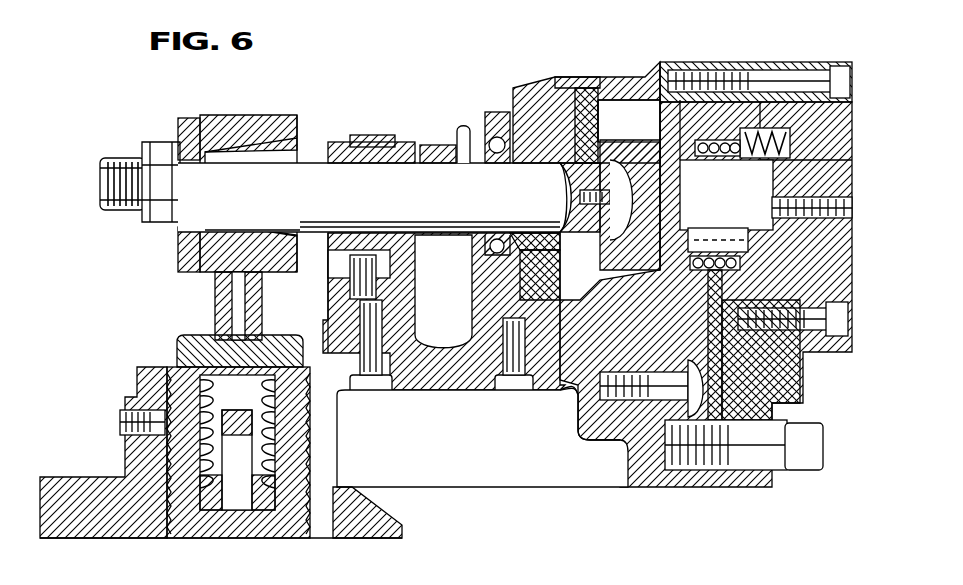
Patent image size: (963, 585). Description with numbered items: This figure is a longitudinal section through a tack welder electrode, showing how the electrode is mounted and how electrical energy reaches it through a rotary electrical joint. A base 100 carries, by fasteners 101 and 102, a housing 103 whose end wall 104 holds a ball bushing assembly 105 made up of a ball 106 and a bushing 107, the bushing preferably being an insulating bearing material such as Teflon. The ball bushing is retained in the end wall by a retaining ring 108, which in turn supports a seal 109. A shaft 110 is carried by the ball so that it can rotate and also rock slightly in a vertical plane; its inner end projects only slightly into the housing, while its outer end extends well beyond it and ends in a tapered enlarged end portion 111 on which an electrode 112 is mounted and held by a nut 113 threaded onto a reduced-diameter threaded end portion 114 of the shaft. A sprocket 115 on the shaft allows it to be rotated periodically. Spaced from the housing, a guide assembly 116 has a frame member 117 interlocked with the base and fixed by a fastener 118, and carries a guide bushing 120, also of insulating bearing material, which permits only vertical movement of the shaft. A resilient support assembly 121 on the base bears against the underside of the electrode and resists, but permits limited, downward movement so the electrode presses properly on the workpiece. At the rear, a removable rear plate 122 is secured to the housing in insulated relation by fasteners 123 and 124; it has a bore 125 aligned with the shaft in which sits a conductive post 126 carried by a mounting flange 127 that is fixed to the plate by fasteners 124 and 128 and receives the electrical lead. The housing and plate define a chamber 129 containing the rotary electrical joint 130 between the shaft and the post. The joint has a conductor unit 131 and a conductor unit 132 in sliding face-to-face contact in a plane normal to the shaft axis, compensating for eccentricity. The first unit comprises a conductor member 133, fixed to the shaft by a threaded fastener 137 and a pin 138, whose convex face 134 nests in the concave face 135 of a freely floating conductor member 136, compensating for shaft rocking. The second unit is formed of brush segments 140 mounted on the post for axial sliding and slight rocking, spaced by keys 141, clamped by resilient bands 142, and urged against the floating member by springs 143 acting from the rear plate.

The base 100 is at (580, 485).
The fastener 101 is at (512, 405).
The fastener 102 is at (620, 443).
The housing 103 is at (590, 80).
The end wall 104 is at (492, 305).
The ball bushing assembly 105 is at (494, 279).
The ball 106 is at (562, 130).
The bushing 107 is at (540, 135).
The retaining ring 108 is at (495, 112).
The seal 109 is at (468, 130).
The shaft 110 is at (320, 150).
The enlarged end portion 111 is at (280, 178).
The electrode 112 is at (297, 125).
The nut 113 is at (160, 142).
The threaded shank 114 is at (112, 226).
The sprocket 115 is at (440, 146).
The guide assembly 116 is at (345, 309).
The frame member 117 is at (328, 289).
The fastener 118 is at (366, 397).
The guide bushing 120 is at (394, 136).
The resilient support assembly 121 is at (200, 321).
The rear plate 122 is at (794, 375).
The fastener 123 is at (796, 470).
The fastener 124 is at (848, 95).
The bore 125 is at (842, 214).
The conductive post 126 is at (730, 197).
The mounting flange 127 is at (846, 136).
The fastener 128 is at (838, 317).
The chamber 129 is at (559, 404).
The rotary electrical joint 130 is at (626, 116).
The conductor unit 131 is at (640, 122).
The conductor unit 132 is at (718, 92).
The conductor member 133 is at (592, 279).
The convex face 134 is at (600, 281).
The concave face 135 is at (576, 257).
The conductor member 136 is at (686, 155).
The threaded fastener 137 is at (574, 221).
The pin 138 is at (576, 187).
The brush segments 140 is at (660, 283).
The keys 141 is at (720, 204).
The resilient bands 142 is at (702, 272).
The springs 143 is at (818, 144).